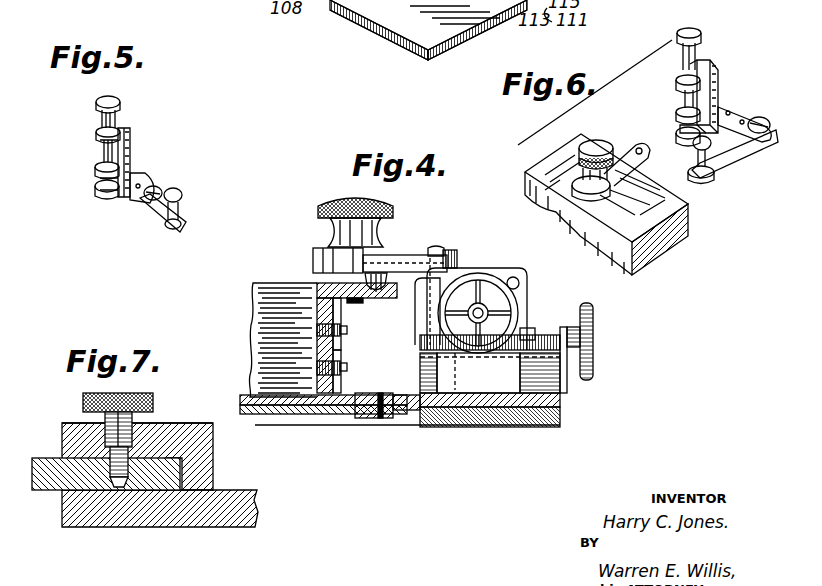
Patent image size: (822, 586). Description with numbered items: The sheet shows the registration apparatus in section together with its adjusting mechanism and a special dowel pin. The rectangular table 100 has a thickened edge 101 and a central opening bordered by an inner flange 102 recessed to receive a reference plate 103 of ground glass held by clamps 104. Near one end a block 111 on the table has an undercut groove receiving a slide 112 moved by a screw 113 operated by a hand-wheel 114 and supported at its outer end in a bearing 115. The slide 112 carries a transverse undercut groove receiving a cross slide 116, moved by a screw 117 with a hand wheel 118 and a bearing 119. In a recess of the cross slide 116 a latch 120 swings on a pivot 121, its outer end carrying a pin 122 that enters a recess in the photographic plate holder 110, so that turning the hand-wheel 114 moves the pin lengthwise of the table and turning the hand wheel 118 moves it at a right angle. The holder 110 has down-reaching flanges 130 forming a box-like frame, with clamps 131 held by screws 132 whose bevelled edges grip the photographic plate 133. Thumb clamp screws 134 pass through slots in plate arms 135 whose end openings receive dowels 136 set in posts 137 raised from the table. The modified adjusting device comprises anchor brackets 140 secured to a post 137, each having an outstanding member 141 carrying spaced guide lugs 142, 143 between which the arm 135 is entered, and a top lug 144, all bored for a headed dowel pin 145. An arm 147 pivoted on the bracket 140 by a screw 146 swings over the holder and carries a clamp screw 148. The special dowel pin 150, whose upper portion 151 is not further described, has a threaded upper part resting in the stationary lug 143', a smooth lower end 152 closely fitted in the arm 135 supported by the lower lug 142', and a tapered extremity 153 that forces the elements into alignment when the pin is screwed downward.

In FIG. 4, the rectangular table 100 is at (492, 402).
In FIG. 4, the thickened edge 101 is at (560, 420).
In FIG. 4, the inner flange 102 is at (407, 413).
In FIG. 4, the reference plate 103 is at (307, 412).
In FIG. 4, the clamps 104 is at (376, 406).
In FIG. 6, the photographic plate holder 110 is at (650, 208).
In FIG. 4, the photographic plate holder 110 is at (317, 287).
In FIG. 4, the block 111 is at (540, 373).
In FIG. 4, the slide 112 is at (527, 333).
In FIG. 4, the screw 113 is at (549, 333).
In FIG. 4, the hand-wheel 114 is at (594, 326).
In FIG. 4, the bearing 115 is at (566, 378).
In FIG. 4, the cross slide 116 is at (529, 328).
In FIG. 4, the screw 117 is at (480, 308).
In FIG. 4, the hand wheel 118 is at (452, 292).
In FIG. 4, the bearing 119 is at (473, 373).
In FIG. 4, the latch 120 is at (402, 268).
In FIG. 4, the pivot 121 is at (500, 310).
In FIG. 4, the pin 122 is at (382, 270).
In FIG. 4, the down-reaching flanges 130 is at (333, 337).
In FIG. 4, the clamps 131 is at (333, 355).
In FIG. 4, the screws 132 is at (347, 367).
In FIG. 4, the photographic plate 133 is at (273, 413).
In FIG. 6, the thumb clamp screws 134 is at (587, 148).
In FIG. 4, the thumb clamp screws 134 is at (318, 206).
In FIG. 6, the plate arms 135 is at (634, 151).
In FIG. 4, the plate arms 135 is at (447, 250).
In FIG. 7, the plate arms 135 is at (40, 467).
In FIG. 4, the dowels 136 is at (440, 249).
In FIG. 4, the posts 137 is at (418, 305).
In FIG. 5, the anchor brackets 140 is at (135, 197).
In FIG. 6, the anchor brackets 140 is at (735, 120).
In FIG. 5, the outstanding member 141 is at (125, 158).
In FIG. 6, the outstanding member 141 is at (707, 88).
In FIG. 5, the guide lug 142 is at (87, 209).
In FIG. 6, the guide lug 142 is at (672, 131).
In FIG. 7, the lower lug 142' is at (160, 525).
In FIG. 5, the guide lug 143 is at (79, 165).
In FIG. 6, the guide lug 143 is at (671, 103).
In FIG. 7, the guide lug 143 is at (141, 445).
In FIG. 7, the lug 143' is at (137, 401).
In FIG. 5, the lug 144 is at (95, 131).
In FIG. 6, the lug 144 is at (684, 76).
In FIG. 5, the headed dowel pin 145 is at (96, 101).
In FIG. 6, the headed dowel pin 145 is at (693, 33).
In FIG. 5, the screw 146 is at (155, 188).
In FIG. 6, the screw 146 is at (762, 122).
In FIG. 5, the arm 147 is at (163, 214).
In FIG. 6, the arm 147 is at (740, 150).
In FIG. 5, the clamp screw 148 is at (182, 193).
In FIG. 6, the clamp screw 148 is at (712, 167).
In FIG. 7, the dowel pin 150 is at (107, 415).
In FIG. 7, the knurled head 151 is at (85, 399).
In FIG. 7, the lower end 152 is at (117, 461).
In FIG. 7, the tapered extremity 153 is at (117, 483).